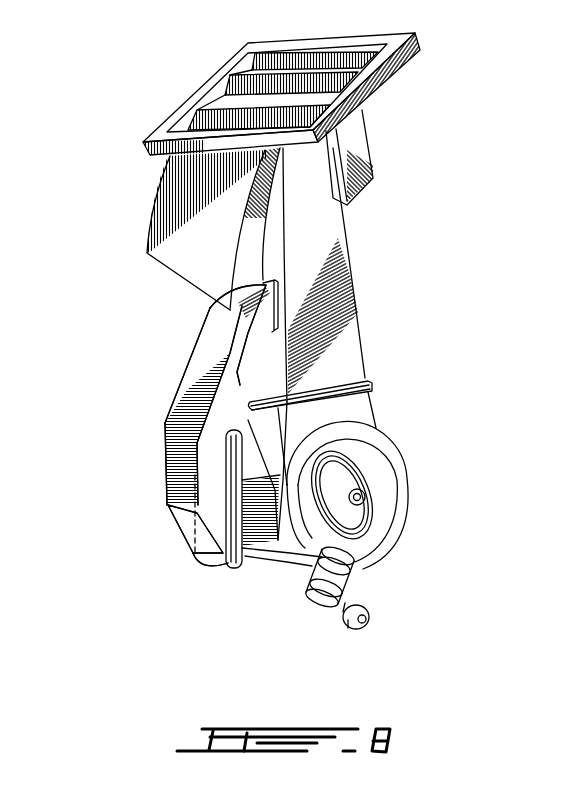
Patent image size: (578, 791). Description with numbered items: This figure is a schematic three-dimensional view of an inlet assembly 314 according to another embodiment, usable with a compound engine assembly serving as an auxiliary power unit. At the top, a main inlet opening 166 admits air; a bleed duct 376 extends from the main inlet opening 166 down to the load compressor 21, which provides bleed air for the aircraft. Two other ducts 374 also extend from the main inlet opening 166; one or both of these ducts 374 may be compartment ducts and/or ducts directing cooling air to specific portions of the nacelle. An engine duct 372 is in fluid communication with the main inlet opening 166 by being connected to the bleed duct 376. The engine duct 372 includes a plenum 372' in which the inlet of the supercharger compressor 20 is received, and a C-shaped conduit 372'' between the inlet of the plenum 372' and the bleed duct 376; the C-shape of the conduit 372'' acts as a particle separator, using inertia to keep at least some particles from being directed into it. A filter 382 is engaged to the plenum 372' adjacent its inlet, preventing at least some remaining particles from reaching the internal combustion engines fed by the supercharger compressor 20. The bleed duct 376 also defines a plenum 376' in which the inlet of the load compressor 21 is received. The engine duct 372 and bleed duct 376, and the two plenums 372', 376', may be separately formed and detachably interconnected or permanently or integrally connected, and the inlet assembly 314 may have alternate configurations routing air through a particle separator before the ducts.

The main inlet opening 166 is at (497, 50).
The ducts 374 is at (437, 119).
The inlet assembly 314 is at (510, 179).
The bleed duct 376 is at (338, 279).
The plenum 376' is at (366, 509).
The engine duct 372 is at (172, 425).
The plenum 372' is at (204, 364).
The C-shaped conduit 372'' is at (154, 471).
The filter 382 is at (127, 567).
The supercharger compressor 20 is at (185, 640).
The load compressor 21 is at (268, 636).